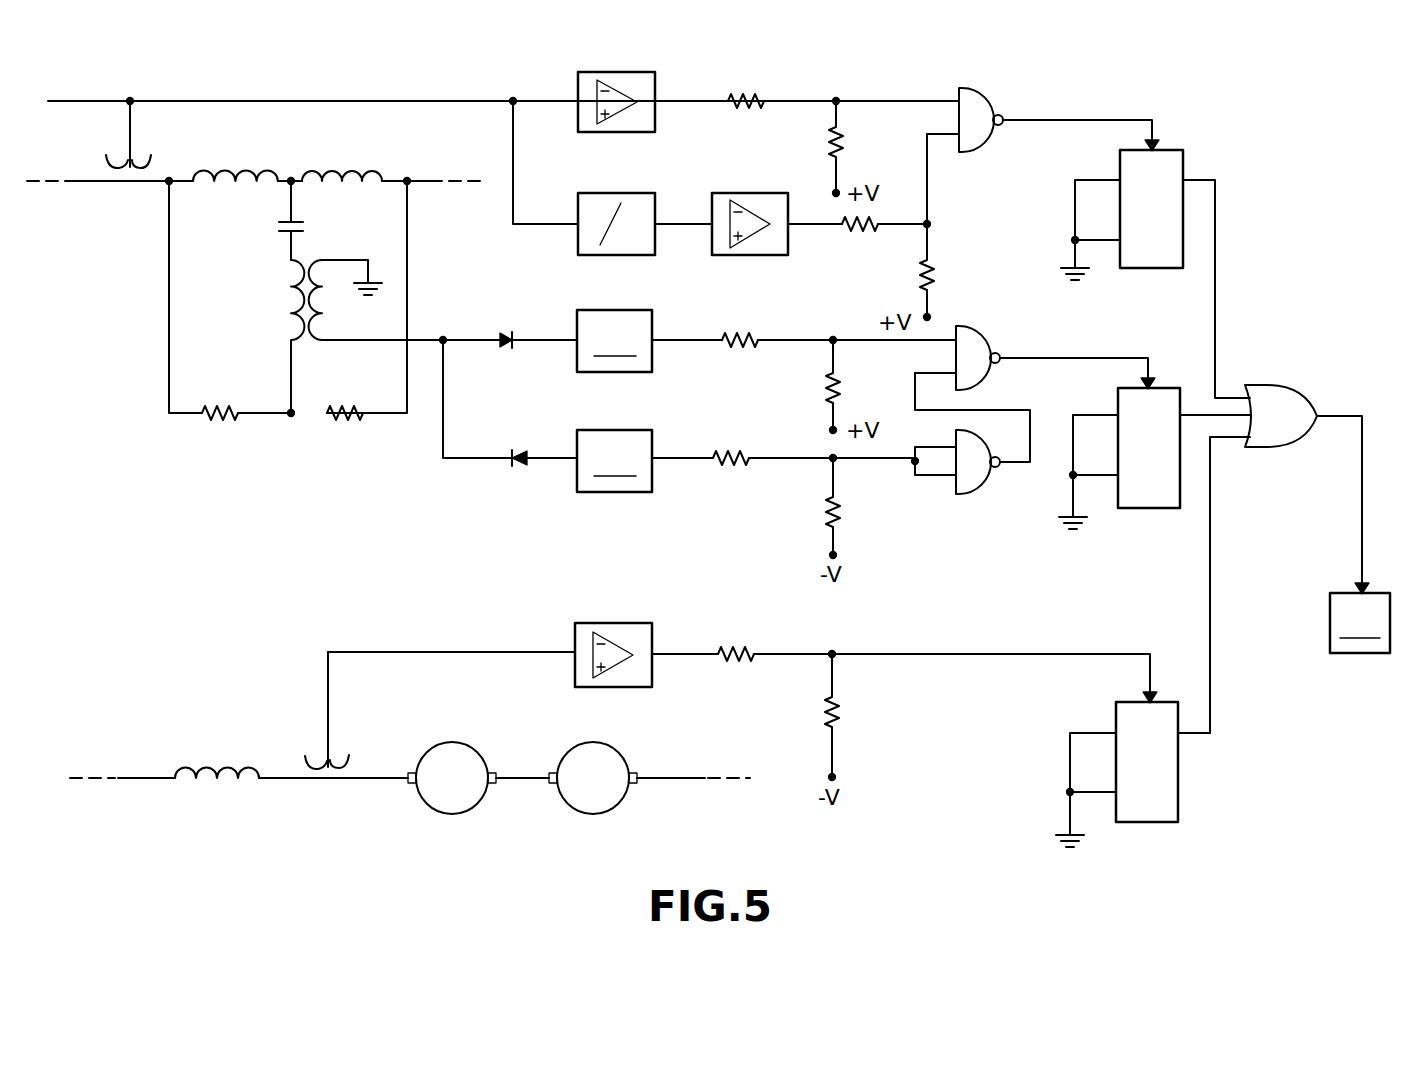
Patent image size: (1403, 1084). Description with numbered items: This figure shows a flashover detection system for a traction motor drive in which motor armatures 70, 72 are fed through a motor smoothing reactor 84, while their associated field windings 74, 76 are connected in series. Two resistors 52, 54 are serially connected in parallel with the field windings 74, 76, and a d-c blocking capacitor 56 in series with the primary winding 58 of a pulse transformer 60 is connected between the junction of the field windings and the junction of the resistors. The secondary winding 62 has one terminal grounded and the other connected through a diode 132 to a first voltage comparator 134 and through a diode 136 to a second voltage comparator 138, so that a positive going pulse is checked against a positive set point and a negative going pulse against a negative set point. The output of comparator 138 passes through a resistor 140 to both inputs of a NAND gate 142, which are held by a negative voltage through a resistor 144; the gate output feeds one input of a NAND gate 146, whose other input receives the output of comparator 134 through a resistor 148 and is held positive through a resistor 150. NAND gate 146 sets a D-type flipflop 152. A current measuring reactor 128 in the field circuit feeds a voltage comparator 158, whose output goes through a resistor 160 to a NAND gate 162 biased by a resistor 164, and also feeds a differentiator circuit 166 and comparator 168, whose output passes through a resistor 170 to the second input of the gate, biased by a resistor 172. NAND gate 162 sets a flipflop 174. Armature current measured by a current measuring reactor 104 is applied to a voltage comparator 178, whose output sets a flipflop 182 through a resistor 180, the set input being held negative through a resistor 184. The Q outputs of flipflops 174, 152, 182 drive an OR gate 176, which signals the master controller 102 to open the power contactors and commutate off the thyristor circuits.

The current measuring reactor 128 is at (108, 160).
The field winding 74 is at (229, 170).
The field winding 76 is at (357, 168).
The d-c blocking capacitor 56 is at (274, 228).
The primary winding 58 is at (286, 301).
The pulse transformer 60 is at (305, 250).
The secondary winding 62 is at (326, 312).
The resistor 54 is at (222, 420).
The resistor 52 is at (348, 420).
The voltage comparator 158 is at (632, 132).
The resistor 160 is at (752, 96).
The NAND gate 162 is at (982, 104).
The biasing resistor 164 is at (828, 159).
The differentiator circuit 166 is at (632, 255).
The voltage comparator 168 is at (768, 255).
The resistor 170 is at (866, 230).
The biasing resistor 172 is at (934, 276).
The D type flipflop 174 is at (1160, 268).
The diode 132 is at (501, 326).
The voltage comparator 134 is at (614, 341).
The diode 136 is at (512, 450).
The voltage comparator 138 is at (614, 461).
The resistor 148 is at (744, 346).
The resistor 150 is at (818, 406).
The resistor 140 is at (742, 464).
The resistor 144 is at (843, 511).
The NAND gate 146 is at (980, 340).
The NAND gate 142 is at (978, 493).
The D-type flipflop 152 is at (1158, 508).
The OR gate 176 is at (1290, 386).
The master controller 102 is at (1360, 623).
The voltage comparator 178 is at (644, 610).
The resistor 180 is at (739, 640).
The resistor 184 is at (824, 717).
The motor smoothing reactor 84 is at (210, 763).
The current measuring reactor 104 is at (348, 760).
The motor armature 70 is at (472, 752).
The motor armature 72 is at (614, 753).
The D-type flipflop 182 is at (1158, 822).